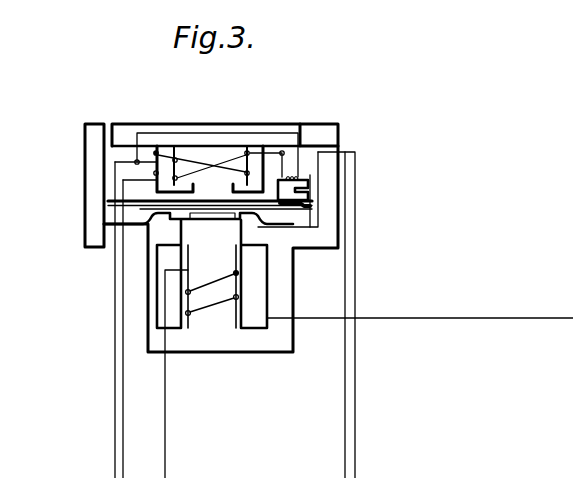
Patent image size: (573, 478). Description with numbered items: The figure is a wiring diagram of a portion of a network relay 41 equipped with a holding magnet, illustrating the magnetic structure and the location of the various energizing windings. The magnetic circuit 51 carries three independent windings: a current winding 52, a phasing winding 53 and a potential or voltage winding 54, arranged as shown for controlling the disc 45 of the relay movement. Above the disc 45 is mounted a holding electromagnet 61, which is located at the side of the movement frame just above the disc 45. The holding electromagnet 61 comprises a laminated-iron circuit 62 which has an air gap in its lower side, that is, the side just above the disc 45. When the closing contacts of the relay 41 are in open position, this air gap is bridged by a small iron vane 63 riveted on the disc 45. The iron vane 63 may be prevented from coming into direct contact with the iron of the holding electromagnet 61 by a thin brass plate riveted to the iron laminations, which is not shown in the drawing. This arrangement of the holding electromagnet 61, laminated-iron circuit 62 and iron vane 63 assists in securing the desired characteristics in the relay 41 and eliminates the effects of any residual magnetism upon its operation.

The relay 41 is at (229, 89).
The disc 45 is at (112, 201).
The magnetic circuit 51 is at (323, 131).
The current winding 52 is at (198, 175).
The phasing winding 53 is at (247, 147).
The potential or voltage winding 54 is at (212, 303).
The holding electromagnet 61 is at (308, 183).
The laminated-iron circuit 62 is at (308, 190).
The iron vane 63 is at (310, 211).